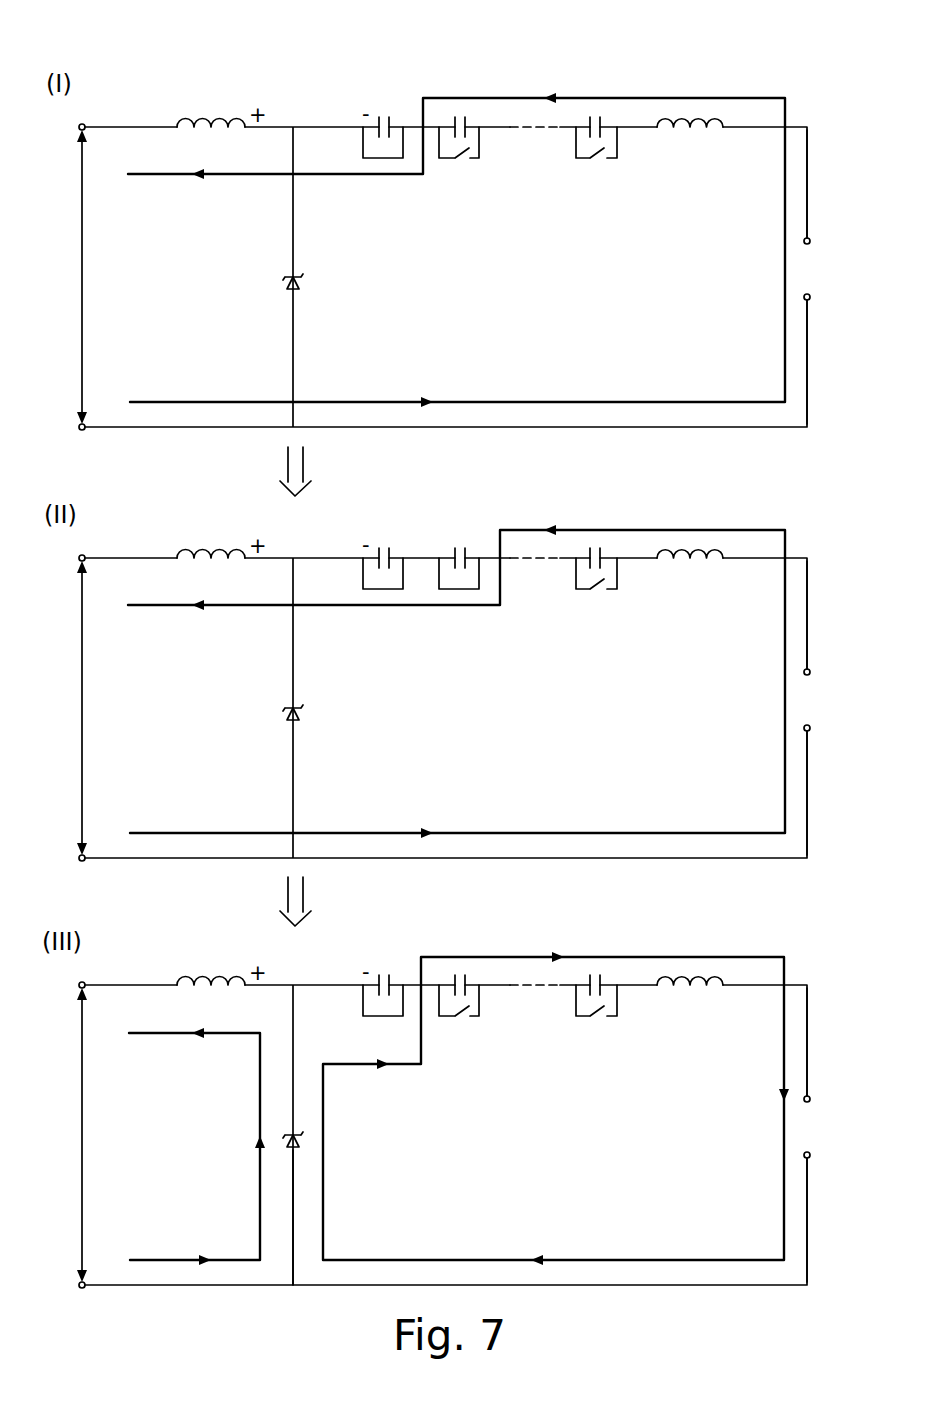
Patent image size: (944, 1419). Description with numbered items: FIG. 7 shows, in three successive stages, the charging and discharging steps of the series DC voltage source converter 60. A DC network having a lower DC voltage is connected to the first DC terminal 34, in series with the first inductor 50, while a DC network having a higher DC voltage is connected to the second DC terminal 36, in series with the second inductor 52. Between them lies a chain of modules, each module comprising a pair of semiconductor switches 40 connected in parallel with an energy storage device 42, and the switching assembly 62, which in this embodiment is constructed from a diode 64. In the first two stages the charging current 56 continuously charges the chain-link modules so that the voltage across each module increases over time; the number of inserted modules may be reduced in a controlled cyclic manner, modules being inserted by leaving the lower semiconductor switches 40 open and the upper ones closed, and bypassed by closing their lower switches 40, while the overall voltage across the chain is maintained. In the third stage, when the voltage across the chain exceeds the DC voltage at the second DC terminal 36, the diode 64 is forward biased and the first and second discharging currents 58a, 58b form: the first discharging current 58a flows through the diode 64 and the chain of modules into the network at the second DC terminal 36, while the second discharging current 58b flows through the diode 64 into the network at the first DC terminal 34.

The first DC terminal 34 is at (54, 277).
The second DC terminal 36 is at (815, 262).
The semiconductor switches 40 is at (462, 160).
The energy storage device 42 is at (383, 116).
The first inductor 50 is at (211, 118).
The second inductor 52 is at (708, 118).
The charging current 56 is at (513, 97).
The first discharging current 58a is at (556, 1088).
The second discharging current 58b is at (197, 1146).
The converter 60 is at (277, 1217).
The switching assembly 62 is at (284, 282).
The diode 64 is at (301, 280).